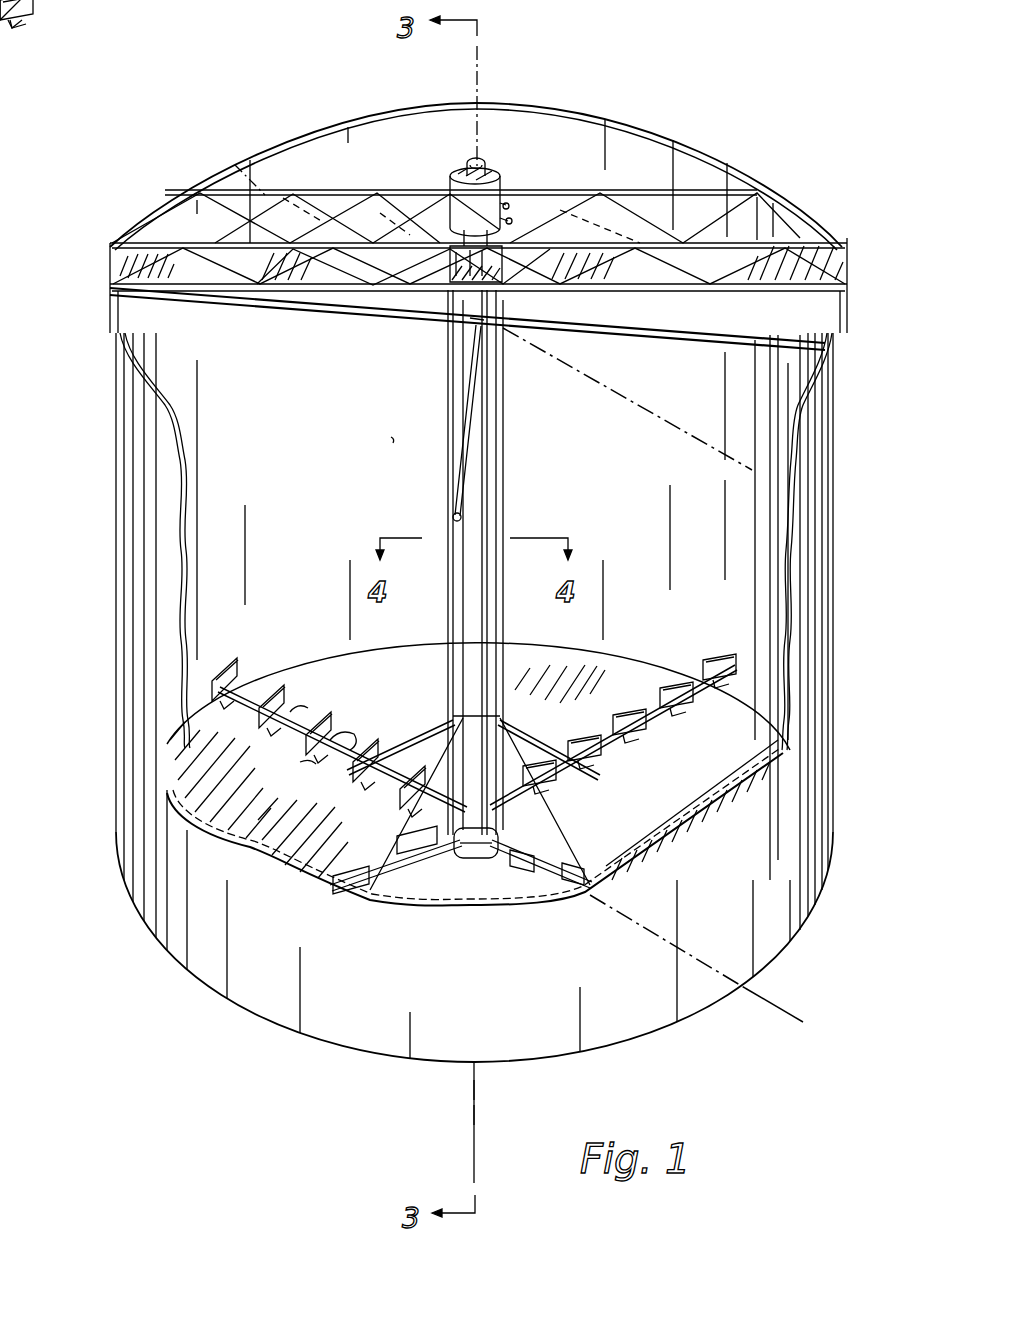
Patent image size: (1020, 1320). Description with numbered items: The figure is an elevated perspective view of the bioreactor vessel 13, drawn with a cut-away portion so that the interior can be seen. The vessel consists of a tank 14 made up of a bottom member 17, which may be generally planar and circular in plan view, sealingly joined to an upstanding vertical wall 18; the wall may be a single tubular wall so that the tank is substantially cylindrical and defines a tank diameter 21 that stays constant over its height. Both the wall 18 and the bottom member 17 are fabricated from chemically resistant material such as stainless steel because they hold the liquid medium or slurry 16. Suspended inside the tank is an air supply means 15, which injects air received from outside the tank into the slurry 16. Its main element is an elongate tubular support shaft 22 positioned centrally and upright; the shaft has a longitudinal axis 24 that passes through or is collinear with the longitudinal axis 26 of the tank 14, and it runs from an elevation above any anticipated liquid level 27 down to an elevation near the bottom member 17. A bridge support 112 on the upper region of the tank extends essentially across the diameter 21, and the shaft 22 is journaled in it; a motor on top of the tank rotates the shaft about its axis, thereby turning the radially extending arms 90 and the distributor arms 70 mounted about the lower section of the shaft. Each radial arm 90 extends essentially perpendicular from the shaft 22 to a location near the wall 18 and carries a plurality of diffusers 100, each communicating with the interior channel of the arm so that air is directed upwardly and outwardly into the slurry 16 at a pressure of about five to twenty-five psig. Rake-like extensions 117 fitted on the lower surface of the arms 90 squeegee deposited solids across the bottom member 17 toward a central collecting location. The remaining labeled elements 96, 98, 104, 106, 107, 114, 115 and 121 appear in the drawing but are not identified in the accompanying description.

The bioreactor vessel 13 is at (832, 567).
The tank 14 is at (832, 659).
The air supply means 15 is at (448, 478).
The liquid medium (slurry) 16 is at (318, 570).
The bottom member 17 is at (478, 774).
The upstanding vertical wall 18 is at (112, 571).
The tank diameter 21 is at (654, 400).
The tubular support shaft 22 is at (493, 438).
The longitudinal axis of shaft 24 is at (478, 1115).
The longitudinal axis of tank 26 is at (472, 1082).
The liquid level 27 is at (394, 443).
The distributor arms 70 is at (370, 313).
The radial arms 90 is at (256, 679).
The rake arm 96 is at (532, 747).
The inner rake blades 98 is at (364, 876).
The diffusers 100 is at (348, 736).
The blade mount 104 is at (298, 710).
The blade hub 106 is at (302, 761).
The floor radius line 107 is at (784, 1013).
The bridge support 112 is at (260, 334).
The bearing housing 114 is at (508, 282).
The drive motor 115 is at (482, 170).
The rake-like extensions 117 is at (315, 789).
The tie rods 121 is at (452, 718).